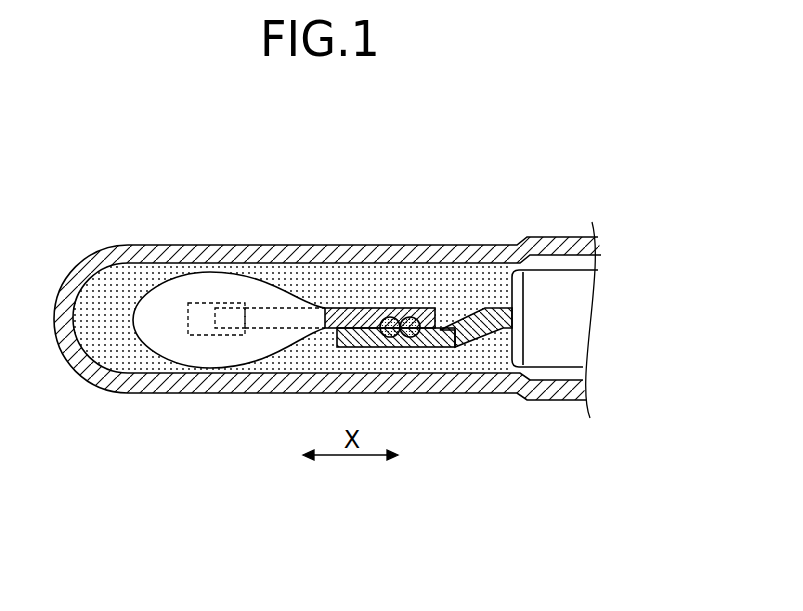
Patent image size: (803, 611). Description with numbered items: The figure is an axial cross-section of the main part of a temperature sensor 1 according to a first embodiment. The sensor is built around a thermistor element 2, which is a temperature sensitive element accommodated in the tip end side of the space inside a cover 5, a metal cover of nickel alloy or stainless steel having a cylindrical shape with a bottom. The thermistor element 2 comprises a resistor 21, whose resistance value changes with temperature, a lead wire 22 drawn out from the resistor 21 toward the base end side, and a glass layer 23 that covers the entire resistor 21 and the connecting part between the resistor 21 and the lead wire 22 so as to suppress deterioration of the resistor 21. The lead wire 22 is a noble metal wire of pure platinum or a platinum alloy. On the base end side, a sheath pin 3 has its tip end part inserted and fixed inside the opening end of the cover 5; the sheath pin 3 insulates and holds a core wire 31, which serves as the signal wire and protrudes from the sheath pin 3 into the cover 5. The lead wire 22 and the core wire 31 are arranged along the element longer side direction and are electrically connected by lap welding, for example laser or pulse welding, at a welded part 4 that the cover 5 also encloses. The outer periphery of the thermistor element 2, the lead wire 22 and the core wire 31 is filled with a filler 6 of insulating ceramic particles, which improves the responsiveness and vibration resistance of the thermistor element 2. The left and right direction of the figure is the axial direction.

The temperature sensor 1 is at (555, 155).
The thermistor element 2 is at (410, 179).
The resistor 21 is at (203, 302).
The lead wire 22 is at (342, 308).
The glass layer 23 is at (258, 300).
The sheath pin 3 is at (560, 308).
The core wire 31 is at (457, 332).
The welded part 4 is at (401, 312).
The cover 5 is at (225, 380).
The filler 6 is at (110, 352).